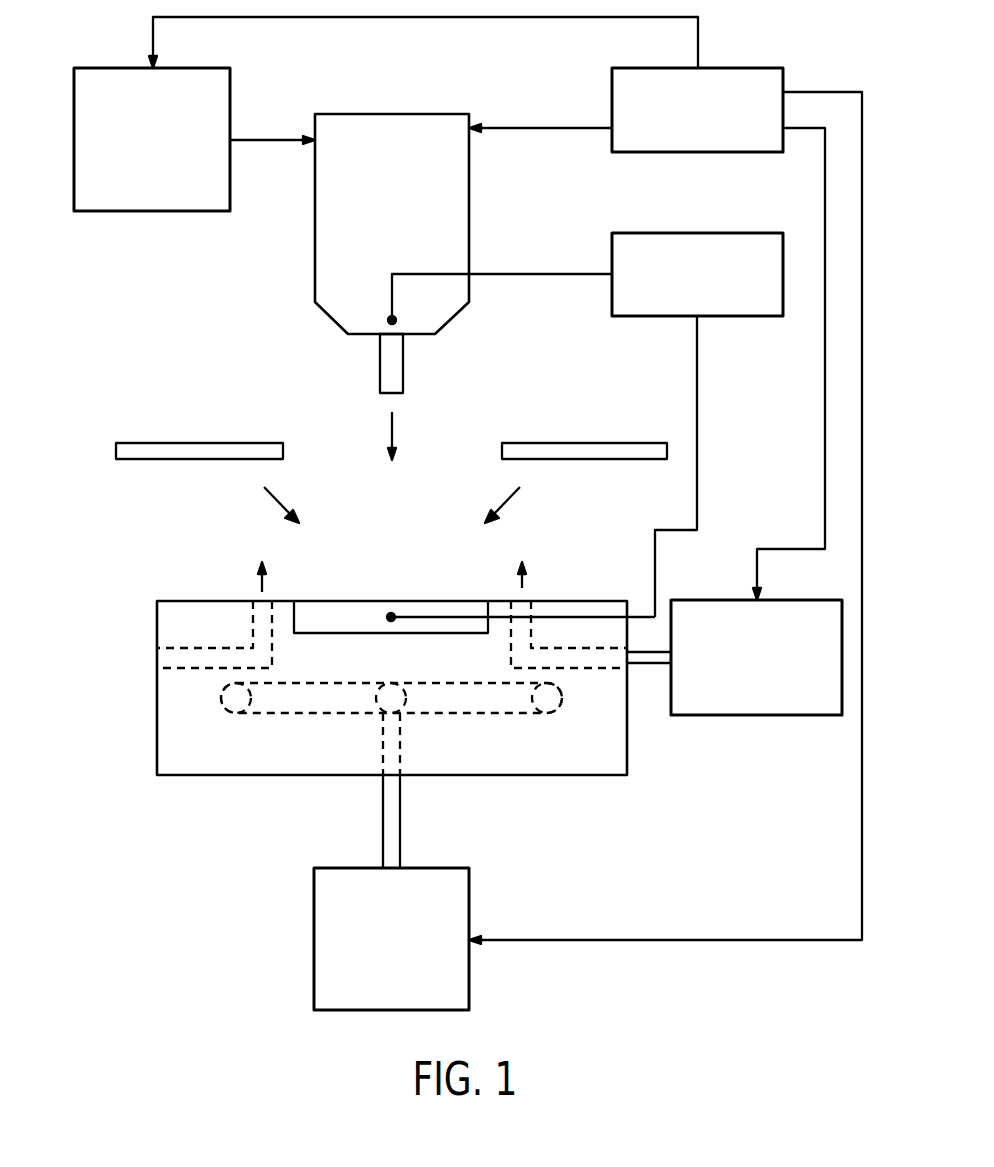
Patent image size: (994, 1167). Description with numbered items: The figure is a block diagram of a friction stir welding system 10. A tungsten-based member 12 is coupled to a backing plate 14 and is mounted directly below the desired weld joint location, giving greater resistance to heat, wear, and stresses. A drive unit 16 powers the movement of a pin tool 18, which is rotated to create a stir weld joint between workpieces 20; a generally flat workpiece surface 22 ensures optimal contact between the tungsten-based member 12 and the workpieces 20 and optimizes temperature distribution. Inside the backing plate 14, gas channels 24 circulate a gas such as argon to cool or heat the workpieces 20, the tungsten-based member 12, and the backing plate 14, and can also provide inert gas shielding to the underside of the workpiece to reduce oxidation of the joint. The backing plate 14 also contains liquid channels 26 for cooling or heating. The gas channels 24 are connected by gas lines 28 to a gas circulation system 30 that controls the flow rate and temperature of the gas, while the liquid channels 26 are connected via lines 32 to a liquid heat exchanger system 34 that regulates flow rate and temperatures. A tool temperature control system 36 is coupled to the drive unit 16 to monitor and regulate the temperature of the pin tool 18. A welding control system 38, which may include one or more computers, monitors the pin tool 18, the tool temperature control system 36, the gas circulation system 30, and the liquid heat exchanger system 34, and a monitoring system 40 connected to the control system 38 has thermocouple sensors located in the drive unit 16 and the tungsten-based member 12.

The friction stir welding system 10 is at (115, 523).
The tungsten-based member 12 is at (357, 610).
The backing plate 14 is at (167, 733).
The drive unit 16 is at (327, 280).
The pin tool 18 is at (388, 375).
The workpieces 20 is at (202, 448).
The workpiece surface 22 is at (427, 588).
The gas channels 24 is at (209, 656).
The liquid channels 26 is at (340, 705).
The gas lines 28 is at (647, 658).
The gas circulation system 30 is at (810, 702).
The lines 32 is at (393, 840).
The liquid heat exchanger system 34 is at (323, 982).
The tool temperature control system 36 is at (223, 115).
The welding control system 38 is at (620, 115).
The monitoring system 40 is at (750, 300).